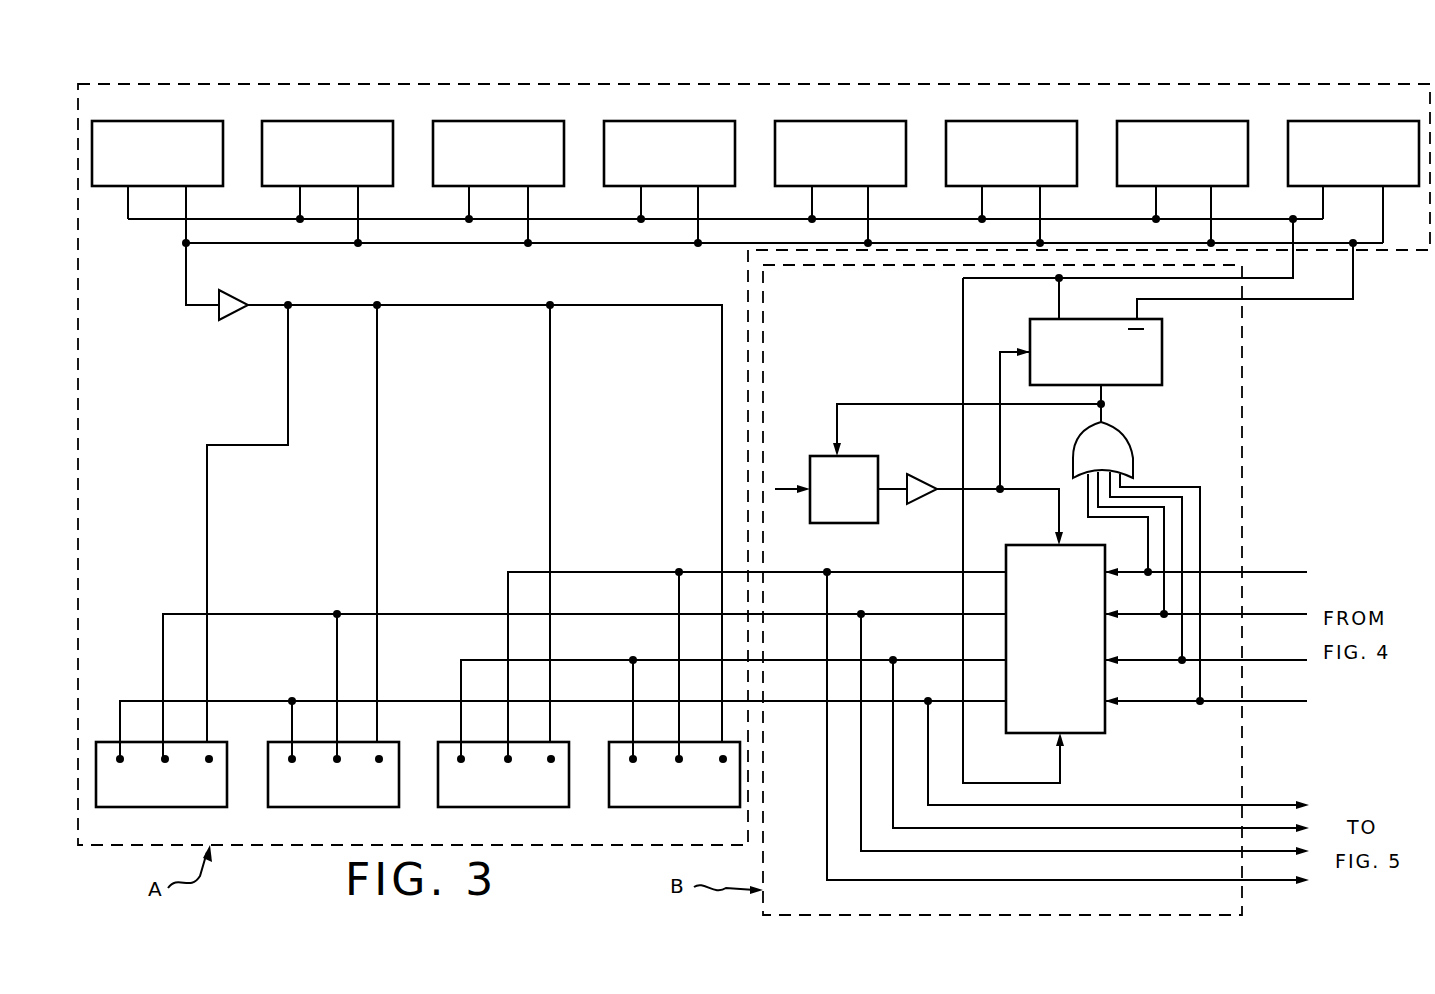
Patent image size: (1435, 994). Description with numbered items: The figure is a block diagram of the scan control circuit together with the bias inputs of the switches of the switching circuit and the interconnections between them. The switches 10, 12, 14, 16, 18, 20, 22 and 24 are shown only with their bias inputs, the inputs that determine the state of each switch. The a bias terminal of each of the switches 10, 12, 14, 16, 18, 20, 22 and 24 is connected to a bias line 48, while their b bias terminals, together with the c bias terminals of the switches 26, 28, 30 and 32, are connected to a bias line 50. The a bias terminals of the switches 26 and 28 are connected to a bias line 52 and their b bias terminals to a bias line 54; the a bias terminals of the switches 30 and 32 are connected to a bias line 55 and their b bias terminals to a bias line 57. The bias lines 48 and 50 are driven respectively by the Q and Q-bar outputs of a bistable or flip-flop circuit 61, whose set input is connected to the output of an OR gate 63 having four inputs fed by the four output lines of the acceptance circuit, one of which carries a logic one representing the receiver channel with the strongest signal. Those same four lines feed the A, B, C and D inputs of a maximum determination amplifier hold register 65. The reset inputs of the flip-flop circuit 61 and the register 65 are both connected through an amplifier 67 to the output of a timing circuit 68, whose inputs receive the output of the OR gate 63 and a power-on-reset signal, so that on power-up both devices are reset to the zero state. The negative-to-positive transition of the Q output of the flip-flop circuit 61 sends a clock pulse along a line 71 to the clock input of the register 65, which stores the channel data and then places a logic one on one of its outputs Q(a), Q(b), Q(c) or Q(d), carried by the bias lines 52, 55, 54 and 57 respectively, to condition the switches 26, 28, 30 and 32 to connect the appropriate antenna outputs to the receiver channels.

The switch 10 is at (170, 131).
The switch 12 is at (340, 131).
The switch 14 is at (511, 131).
The switch 16 is at (682, 131).
The switch 18 is at (853, 131).
The switch 20 is at (1024, 131).
The switch 22 is at (1195, 131).
The switch 24 is at (1366, 131).
The switch 26 is at (205, 807).
The switch 28 is at (345, 807).
The switch 30 is at (530, 807).
The switch 32 is at (680, 807).
The bias line 48 is at (165, 220).
The bias line 50 is at (214, 320).
The bias line 52 is at (141, 701).
The bias line 54 is at (306, 614).
The bias line 55 is at (476, 660).
The bias line 57 is at (640, 572).
The flip-flop circuit 61 is at (1162, 355).
The OR gate 63 is at (1133, 450).
The maximum determination amplifier hold register 65 is at (1105, 722).
The amplifier 67 is at (930, 500).
The timing circuit 68 is at (868, 456).
The clock line 71 is at (963, 312).